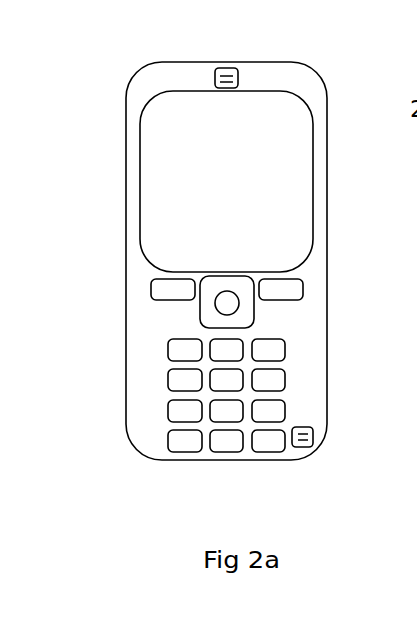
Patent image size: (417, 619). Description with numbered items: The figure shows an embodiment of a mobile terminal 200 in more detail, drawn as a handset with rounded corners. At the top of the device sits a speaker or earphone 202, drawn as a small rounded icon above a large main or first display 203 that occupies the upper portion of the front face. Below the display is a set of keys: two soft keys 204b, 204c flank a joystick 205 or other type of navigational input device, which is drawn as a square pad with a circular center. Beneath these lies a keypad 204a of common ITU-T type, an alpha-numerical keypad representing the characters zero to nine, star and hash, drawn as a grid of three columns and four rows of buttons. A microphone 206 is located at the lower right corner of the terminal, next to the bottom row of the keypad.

The mobile terminal 200 is at (112, 120).
The speaker or earphone 202 is at (224, 68).
The main or first display 203 is at (315, 171).
The keypad 204a is at (168, 350).
The soft key 204b is at (151, 291).
The soft key 204c is at (303, 292).
The joystick 205 is at (254, 310).
The microphone 206 is at (310, 440).